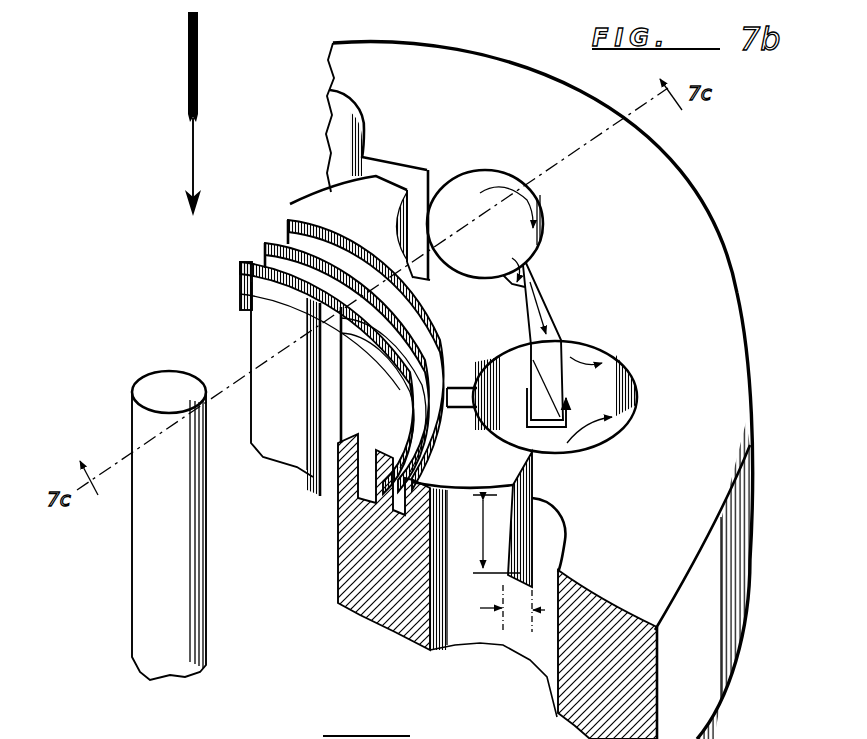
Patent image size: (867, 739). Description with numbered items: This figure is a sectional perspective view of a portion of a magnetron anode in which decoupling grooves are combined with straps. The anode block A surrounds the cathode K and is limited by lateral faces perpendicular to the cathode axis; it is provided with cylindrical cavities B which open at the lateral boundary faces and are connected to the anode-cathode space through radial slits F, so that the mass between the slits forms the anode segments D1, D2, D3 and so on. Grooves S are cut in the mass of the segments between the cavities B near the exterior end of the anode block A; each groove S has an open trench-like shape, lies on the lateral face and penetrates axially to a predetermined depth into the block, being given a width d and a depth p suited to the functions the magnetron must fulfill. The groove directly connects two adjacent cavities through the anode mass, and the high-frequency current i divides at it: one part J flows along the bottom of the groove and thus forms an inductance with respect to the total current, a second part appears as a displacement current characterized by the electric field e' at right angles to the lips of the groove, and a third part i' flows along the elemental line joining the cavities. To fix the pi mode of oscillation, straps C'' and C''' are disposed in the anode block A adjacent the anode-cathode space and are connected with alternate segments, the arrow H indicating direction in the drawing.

The anode block A is at (538, 390).
The cylindrical cavities B is at (350, 120).
The grooves S is at (397, 181).
The anode segment D1 is at (345, 447).
The anode segment D2 is at (378, 398).
The anode segment D3 is at (248, 325).
The strap C'' is at (310, 368).
The strap C''' is at (335, 355).
The radial slits F is at (372, 350).
The electric field e' is at (544, 264).
The total current i is at (577, 312).
The current part i' is at (598, 332).
The current part J is at (546, 421).
The cathode K is at (159, 384).
The direction of motion arrow H is at (178, 114).
The groove depth p is at (496, 534).
The groove width d is at (512, 614).